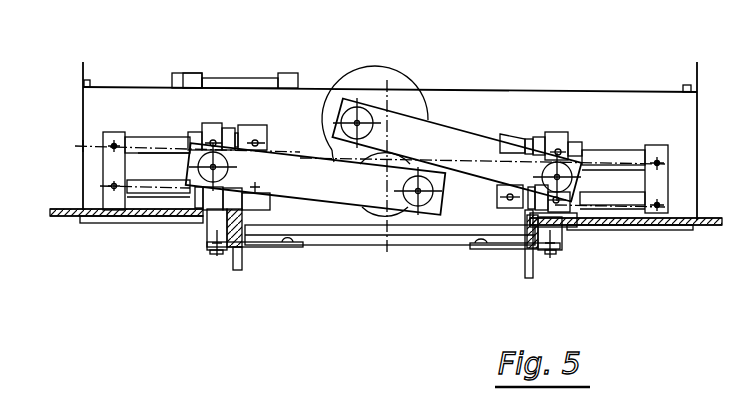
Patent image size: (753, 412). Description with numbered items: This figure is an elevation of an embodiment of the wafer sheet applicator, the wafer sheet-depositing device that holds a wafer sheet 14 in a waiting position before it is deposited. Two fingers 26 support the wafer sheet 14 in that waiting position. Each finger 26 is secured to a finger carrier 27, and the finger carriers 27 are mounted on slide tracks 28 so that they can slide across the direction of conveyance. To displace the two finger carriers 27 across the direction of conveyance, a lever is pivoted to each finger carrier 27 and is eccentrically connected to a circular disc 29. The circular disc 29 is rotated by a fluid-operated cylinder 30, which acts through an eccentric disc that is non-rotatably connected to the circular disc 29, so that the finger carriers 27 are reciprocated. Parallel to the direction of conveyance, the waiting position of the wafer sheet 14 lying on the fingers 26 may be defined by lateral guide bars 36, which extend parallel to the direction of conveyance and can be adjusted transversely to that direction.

The wafer sheet 14 is at (367, 237).
The finger 26 is at (282, 248).
The finger carrier 27 is at (210, 243).
The slide track 28 is at (153, 187).
The circular disc 29 is at (411, 112).
The fluid-operated cylinder 30 is at (258, 84).
The lateral guide bar 36 is at (236, 222).